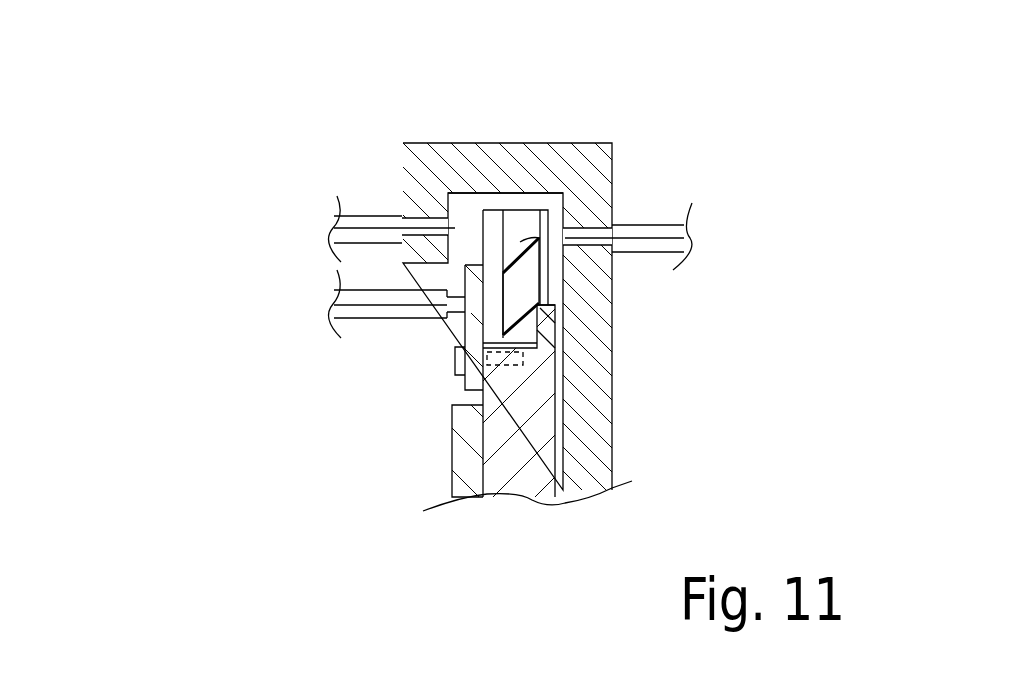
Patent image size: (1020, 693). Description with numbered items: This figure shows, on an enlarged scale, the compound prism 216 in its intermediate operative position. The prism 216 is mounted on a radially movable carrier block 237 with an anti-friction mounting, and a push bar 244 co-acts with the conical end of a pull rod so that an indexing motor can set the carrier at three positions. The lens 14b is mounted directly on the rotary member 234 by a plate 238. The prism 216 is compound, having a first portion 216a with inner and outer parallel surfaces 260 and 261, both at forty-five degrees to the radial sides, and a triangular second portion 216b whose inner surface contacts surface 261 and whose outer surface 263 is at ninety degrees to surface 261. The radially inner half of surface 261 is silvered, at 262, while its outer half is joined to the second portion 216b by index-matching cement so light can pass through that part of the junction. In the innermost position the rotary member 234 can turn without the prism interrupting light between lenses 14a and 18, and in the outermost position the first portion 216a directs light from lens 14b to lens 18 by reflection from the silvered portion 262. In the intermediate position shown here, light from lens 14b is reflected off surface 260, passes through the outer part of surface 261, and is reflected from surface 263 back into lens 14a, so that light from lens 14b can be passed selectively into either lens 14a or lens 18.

The lens 14a is at (403, 195).
The lens 14b is at (458, 318).
The lens 18 is at (583, 242).
The compound prism 216 is at (513, 213).
The first portion of prism 216a is at (545, 276).
The second portion of prism 216b is at (499, 210).
The rotary member 234 is at (503, 468).
The carrier block 237 is at (495, 207).
The plate 238 is at (455, 377).
The push bar 244 is at (450, 440).
The inner surface 260 is at (557, 375).
The outer surface 261 is at (520, 242).
The silvered portion 262 is at (460, 200).
The outer surface 263 is at (505, 196).